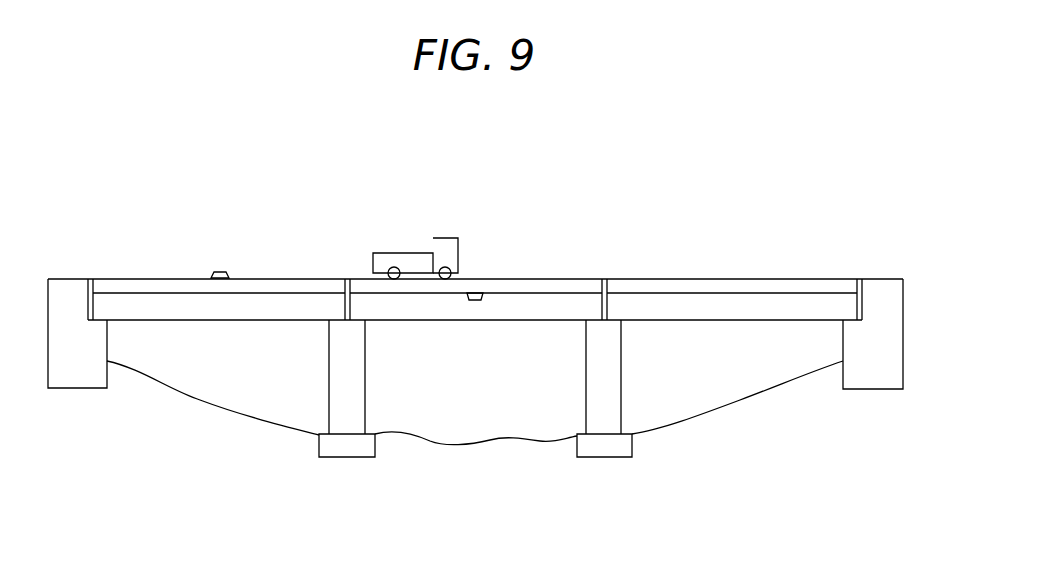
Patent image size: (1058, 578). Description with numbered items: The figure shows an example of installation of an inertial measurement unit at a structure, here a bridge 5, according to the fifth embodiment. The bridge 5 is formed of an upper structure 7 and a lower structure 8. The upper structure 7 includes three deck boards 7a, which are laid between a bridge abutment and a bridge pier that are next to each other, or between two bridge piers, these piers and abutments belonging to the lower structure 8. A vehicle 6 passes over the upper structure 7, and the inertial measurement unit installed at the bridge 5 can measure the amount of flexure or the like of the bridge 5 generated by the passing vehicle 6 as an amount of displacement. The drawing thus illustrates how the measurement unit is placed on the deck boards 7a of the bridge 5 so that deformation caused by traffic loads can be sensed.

The bridge 5 is at (808, 188).
The vehicle 6 is at (408, 253).
The upper structure 7 is at (115, 250).
The deck board 7a is at (288, 279).
The lower structure 8 is at (295, 482).